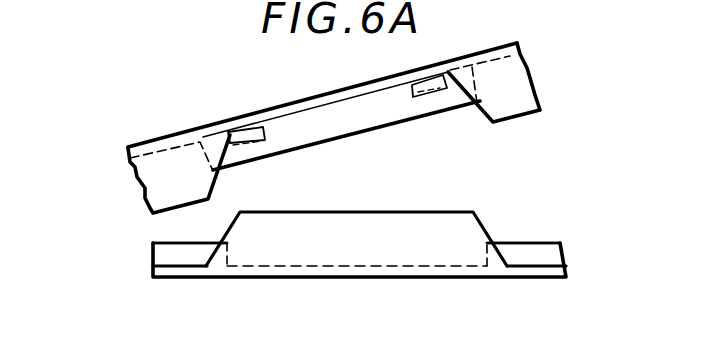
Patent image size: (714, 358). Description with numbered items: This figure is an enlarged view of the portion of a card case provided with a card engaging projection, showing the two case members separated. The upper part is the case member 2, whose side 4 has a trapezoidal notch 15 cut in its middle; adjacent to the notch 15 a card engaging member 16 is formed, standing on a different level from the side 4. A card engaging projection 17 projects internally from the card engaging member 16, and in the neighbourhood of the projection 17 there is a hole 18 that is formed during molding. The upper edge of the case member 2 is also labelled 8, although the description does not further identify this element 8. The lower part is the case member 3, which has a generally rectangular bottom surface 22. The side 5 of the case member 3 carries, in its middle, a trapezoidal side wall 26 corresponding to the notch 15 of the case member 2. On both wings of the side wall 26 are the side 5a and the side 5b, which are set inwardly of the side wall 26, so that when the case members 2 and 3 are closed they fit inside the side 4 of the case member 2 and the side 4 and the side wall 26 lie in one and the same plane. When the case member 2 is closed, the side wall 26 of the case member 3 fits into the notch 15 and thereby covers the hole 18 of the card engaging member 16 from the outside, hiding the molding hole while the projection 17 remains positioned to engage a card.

The case member 2 is at (333, 93).
The case member 3 is at (483, 280).
The side 4 is at (517, 87).
The side 5 is at (225, 275).
The side 5a is at (553, 260).
The side 5b is at (157, 260).
The upper edge 8 is at (272, 110).
The trapezoidal notch 15 is at (320, 153).
The card engaging member 16 is at (350, 125).
The card engaging projection 17 is at (241, 144).
The hole 18 is at (235, 133).
The bottom surface 22 is at (282, 262).
The trapezoidal side wall 26 is at (397, 247).